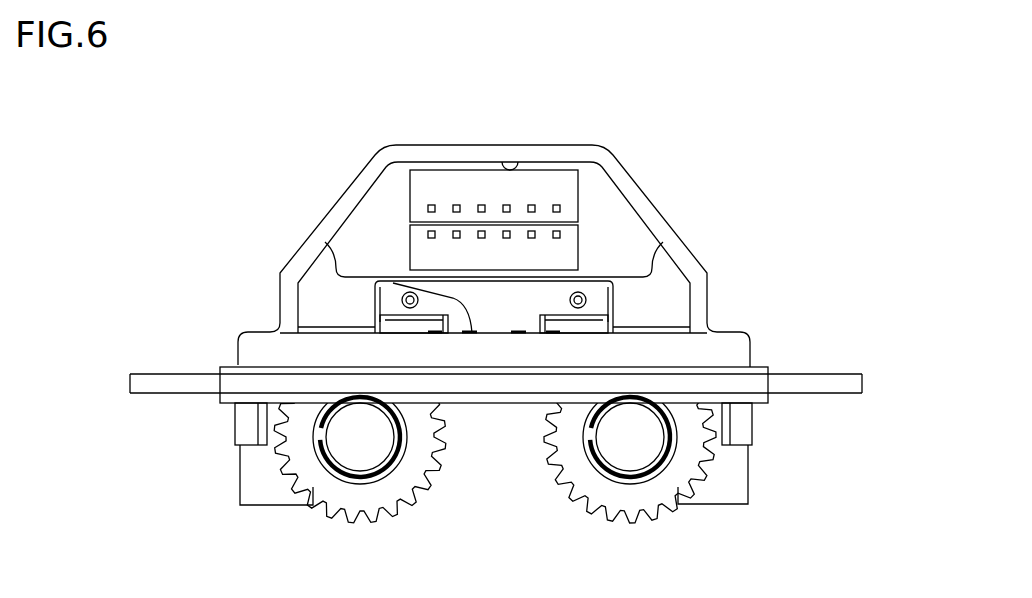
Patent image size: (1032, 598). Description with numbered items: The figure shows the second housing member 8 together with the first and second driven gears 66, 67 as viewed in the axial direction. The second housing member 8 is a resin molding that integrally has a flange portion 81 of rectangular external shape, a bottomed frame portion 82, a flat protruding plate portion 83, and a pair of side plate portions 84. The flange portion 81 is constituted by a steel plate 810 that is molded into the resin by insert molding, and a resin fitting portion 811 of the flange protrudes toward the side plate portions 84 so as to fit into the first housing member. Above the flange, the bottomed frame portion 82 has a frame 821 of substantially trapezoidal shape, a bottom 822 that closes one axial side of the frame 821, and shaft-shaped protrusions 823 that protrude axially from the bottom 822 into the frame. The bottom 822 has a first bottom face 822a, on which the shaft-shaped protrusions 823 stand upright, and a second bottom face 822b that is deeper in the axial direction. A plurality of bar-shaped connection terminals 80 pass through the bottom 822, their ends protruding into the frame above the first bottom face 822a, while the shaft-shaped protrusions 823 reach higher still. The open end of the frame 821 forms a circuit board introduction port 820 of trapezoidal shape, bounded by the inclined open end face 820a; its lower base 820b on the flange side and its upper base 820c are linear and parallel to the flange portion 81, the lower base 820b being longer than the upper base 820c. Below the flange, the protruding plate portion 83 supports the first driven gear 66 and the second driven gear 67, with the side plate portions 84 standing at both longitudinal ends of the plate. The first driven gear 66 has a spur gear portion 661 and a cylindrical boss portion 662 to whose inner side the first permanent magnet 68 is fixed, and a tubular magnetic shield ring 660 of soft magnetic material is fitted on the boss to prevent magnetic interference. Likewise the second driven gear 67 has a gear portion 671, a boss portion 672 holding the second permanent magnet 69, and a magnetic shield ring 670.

The second housing member 8 is at (316, 119).
The connection terminal 80 is at (481, 205).
The flange portion 81 is at (787, 360).
The steel plate 810 is at (868, 381).
The fitting portion 811 is at (770, 405).
The bottomed frame portion 82 is at (752, 190).
The circuit board introduction port 820 is at (363, 222).
The open end face 820a is at (330, 225).
The lower base 820b is at (393, 283).
The upper base 820c is at (504, 168).
The frame 821 is at (677, 236).
The bottom 822 is at (663, 300).
The first bottom face 822a is at (517, 300).
The second bottom face 822b is at (587, 173).
The shaft-shaped protrusion 823 is at (402, 299).
The protruding plate portion 83 is at (242, 492).
The side plate portion 84 is at (247, 418).
The first driven gear 66 is at (577, 526).
The magnetic shield ring 660 is at (622, 473).
The gear portion 661 is at (657, 515).
The boss portion 662 is at (655, 468).
The second driven gear 67 is at (410, 525).
The magnetic shield ring 670 is at (365, 483).
The gear portion 671 is at (342, 517).
The boss portion 672 is at (333, 468).
The first permanent magnet 68 is at (613, 453).
The second permanent magnet 69 is at (373, 455).